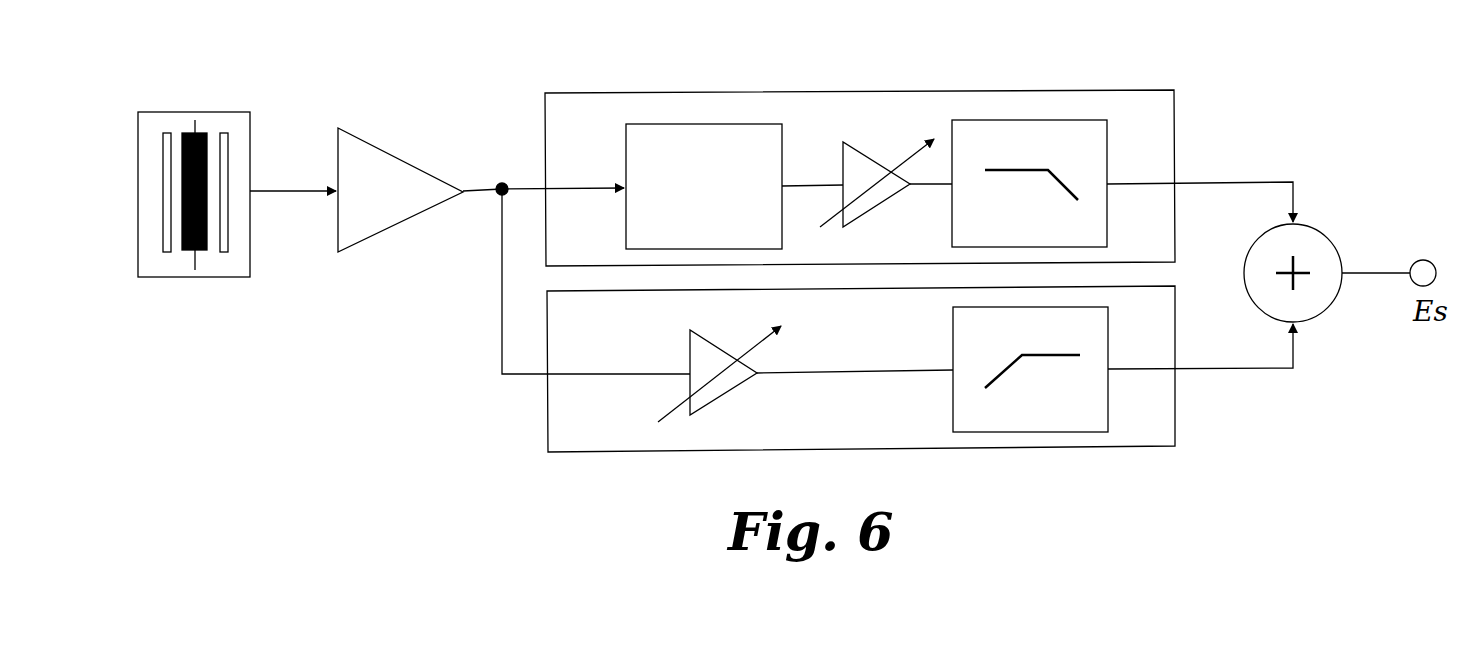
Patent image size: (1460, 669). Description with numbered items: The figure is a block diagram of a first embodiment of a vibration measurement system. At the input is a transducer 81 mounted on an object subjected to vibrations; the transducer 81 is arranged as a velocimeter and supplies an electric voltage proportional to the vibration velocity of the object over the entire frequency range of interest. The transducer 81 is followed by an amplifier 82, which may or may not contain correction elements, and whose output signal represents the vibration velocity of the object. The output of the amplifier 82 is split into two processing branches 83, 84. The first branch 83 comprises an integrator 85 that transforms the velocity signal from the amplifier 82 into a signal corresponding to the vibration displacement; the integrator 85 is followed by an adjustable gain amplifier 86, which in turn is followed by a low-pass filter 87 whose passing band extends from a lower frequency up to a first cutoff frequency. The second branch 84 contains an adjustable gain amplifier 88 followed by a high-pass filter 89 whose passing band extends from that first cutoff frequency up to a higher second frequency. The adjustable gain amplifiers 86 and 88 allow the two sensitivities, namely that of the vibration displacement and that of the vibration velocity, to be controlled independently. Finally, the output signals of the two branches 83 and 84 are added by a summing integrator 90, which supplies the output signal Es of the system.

The transducer 81 is at (207, 112).
The amplifier 82 is at (393, 155).
The branch 83 is at (848, 90).
The branch 84 is at (1035, 447).
The integrator 85 is at (782, 173).
The adjustable gain amplifier 86 is at (867, 153).
The low-pass filter 87 is at (1107, 155).
The adjustable gain amplifier 88 is at (722, 398).
The high-pass filter 89 is at (953, 408).
The summing integrator 90 is at (1313, 320).